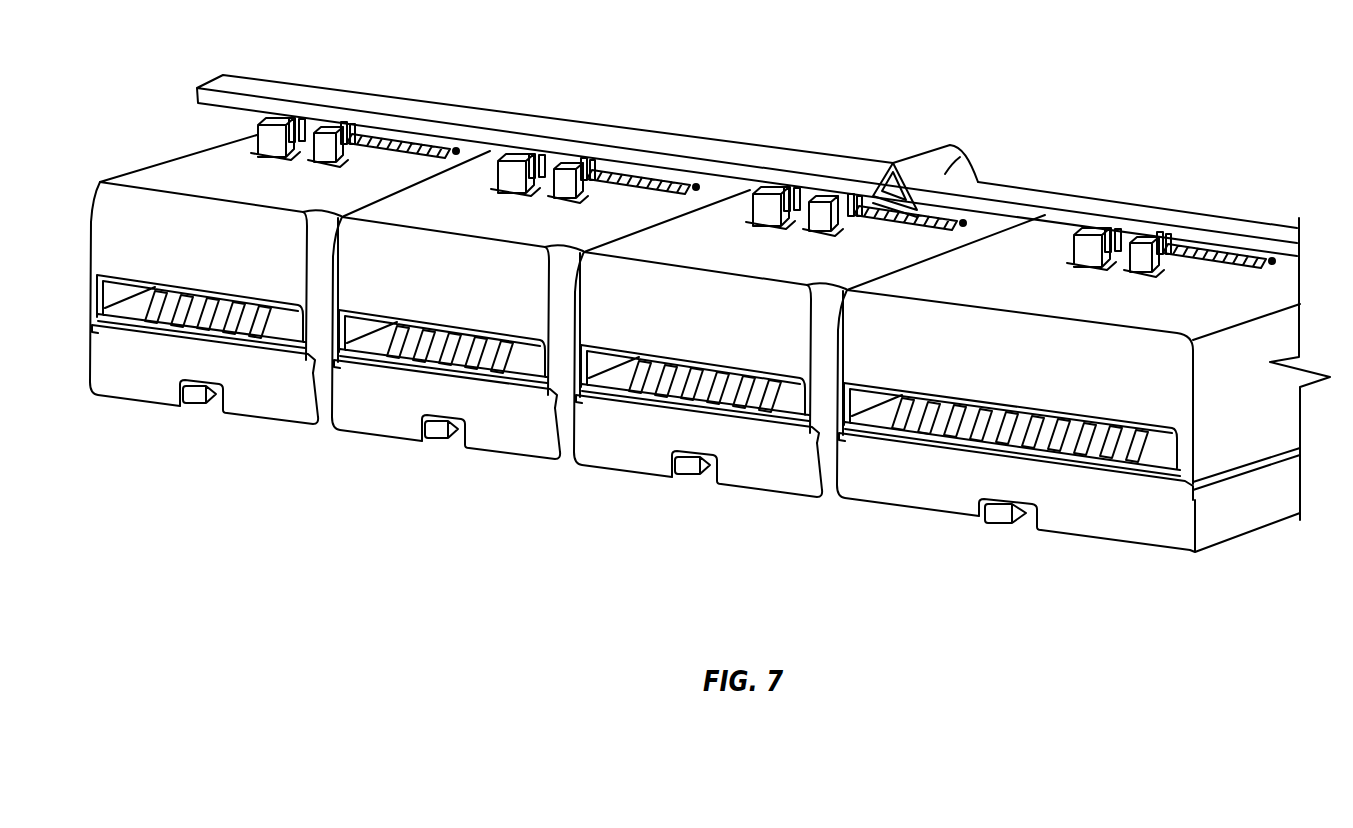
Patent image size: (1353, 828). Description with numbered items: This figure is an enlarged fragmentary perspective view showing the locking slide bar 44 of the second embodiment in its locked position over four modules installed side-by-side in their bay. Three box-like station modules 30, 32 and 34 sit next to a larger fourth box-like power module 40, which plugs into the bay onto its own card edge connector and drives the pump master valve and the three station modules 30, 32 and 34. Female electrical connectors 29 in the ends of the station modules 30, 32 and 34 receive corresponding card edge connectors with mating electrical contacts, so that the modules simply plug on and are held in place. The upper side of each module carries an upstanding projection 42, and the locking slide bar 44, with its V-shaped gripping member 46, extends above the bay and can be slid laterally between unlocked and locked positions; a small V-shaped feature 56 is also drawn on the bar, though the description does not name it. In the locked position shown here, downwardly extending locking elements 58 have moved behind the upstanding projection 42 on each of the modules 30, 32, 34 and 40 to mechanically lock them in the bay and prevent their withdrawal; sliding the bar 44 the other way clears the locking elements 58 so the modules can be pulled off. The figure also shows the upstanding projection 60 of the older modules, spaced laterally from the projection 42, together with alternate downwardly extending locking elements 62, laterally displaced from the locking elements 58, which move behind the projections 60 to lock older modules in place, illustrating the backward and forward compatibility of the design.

The female electrical connector 29 is at (187, 332).
The station module 30 is at (734, 256).
The station module 32 is at (506, 230).
The station module 34 is at (262, 189).
The power module 40 is at (988, 294).
The upstanding projection 42 is at (262, 141).
The locking slide bar 44 is at (1040, 203).
The V-shaped gripping member 46 is at (947, 175).
The retaining clip 56 is at (893, 165).
The locking element 58 is at (297, 127).
The upstanding projection 60 is at (318, 160).
The alternate locking element 62 is at (357, 137).